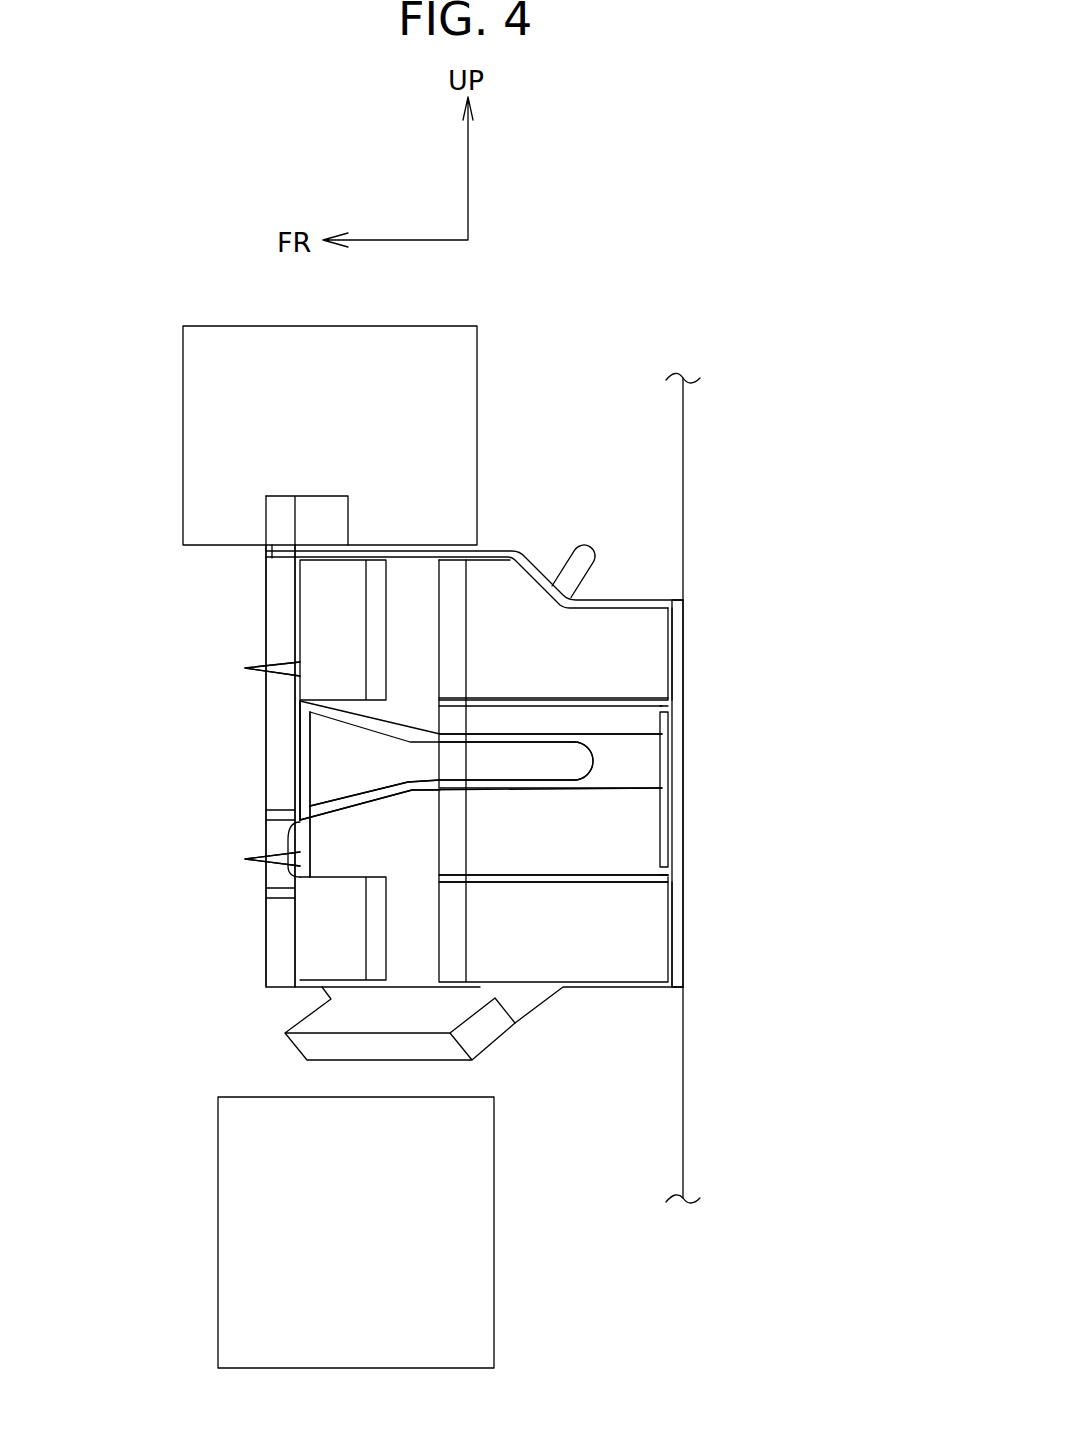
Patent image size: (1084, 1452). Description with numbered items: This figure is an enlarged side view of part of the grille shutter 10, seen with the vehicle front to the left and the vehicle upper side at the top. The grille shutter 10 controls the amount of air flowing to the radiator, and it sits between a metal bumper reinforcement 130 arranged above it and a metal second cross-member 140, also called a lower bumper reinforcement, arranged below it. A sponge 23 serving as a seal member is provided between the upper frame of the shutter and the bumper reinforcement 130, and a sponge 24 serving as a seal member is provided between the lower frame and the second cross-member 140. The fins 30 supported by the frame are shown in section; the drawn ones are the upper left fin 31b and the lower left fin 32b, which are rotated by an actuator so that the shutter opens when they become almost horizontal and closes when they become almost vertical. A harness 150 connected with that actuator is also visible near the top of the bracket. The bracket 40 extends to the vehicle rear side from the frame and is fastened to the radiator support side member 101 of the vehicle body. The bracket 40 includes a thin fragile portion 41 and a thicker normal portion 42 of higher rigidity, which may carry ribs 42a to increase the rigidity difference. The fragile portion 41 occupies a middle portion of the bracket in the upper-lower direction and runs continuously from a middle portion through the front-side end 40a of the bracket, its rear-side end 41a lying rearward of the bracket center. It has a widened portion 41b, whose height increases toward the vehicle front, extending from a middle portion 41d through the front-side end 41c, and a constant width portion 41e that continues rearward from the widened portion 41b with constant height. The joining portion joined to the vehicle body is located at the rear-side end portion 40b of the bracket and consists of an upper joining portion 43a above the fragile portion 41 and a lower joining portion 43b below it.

The grille shutter 10 is at (238, 988).
The sponge 23 is at (333, 517).
The sponge 24 is at (327, 1045).
The fins 30 is at (247, 667).
The upper left fin 31b is at (247, 672).
The lower left fin 32b is at (247, 870).
The bracket 40 is at (493, 572).
The front-side end of the bracket 40a is at (293, 735).
The rear-side end portion of the bracket 40b is at (677, 683).
The fragile portion 41 is at (355, 748).
The rear-side end of the fragile portion 41a is at (593, 758).
The widened portion 41b is at (349, 778).
The front-side end of the fragile portion 41c is at (293, 765).
The middle portion of the fragile portion 41d is at (410, 792).
The constant width portion 41e is at (517, 767).
The normal portion 42 is at (523, 578).
The ribs 42a is at (553, 700).
The upper joining portion 43a is at (678, 652).
The lower joining portion 43b is at (680, 916).
The radiator support side member 101 is at (682, 410).
The bumper reinforcement 130 is at (212, 392).
The second cross-member 140 is at (245, 1220).
The harness 150 is at (587, 558).